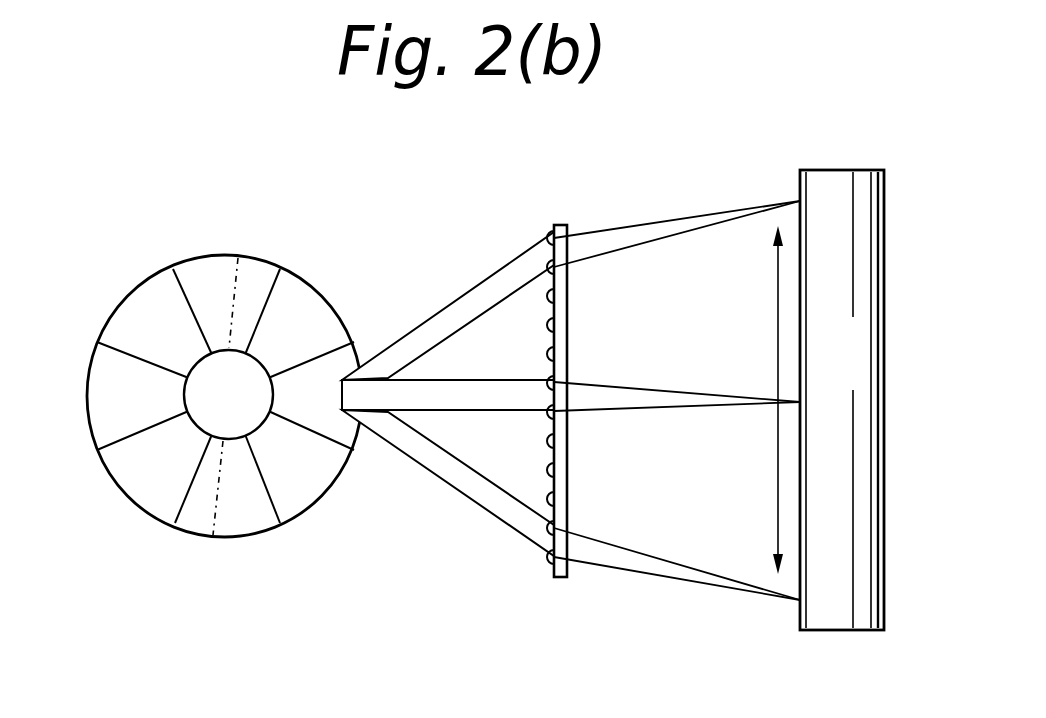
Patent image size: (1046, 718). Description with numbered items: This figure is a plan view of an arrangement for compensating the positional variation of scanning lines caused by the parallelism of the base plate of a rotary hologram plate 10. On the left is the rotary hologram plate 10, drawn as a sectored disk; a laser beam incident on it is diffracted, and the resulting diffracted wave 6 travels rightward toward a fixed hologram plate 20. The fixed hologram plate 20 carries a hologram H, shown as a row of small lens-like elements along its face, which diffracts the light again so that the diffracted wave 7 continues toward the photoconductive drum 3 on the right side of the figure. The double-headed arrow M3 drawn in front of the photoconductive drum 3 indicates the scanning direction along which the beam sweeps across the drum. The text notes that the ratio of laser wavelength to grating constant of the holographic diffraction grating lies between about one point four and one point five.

The rotary hologram plate 10 is at (133, 501).
The diffracted wave 6 is at (448, 318).
The diffracted wave 7 is at (690, 223).
The fixed hologram plate 20 is at (563, 577).
The hologram H is at (548, 355).
The photoconductive drum 3 is at (867, 223).
The arrow indicating scanning direction M3 is at (752, 400).